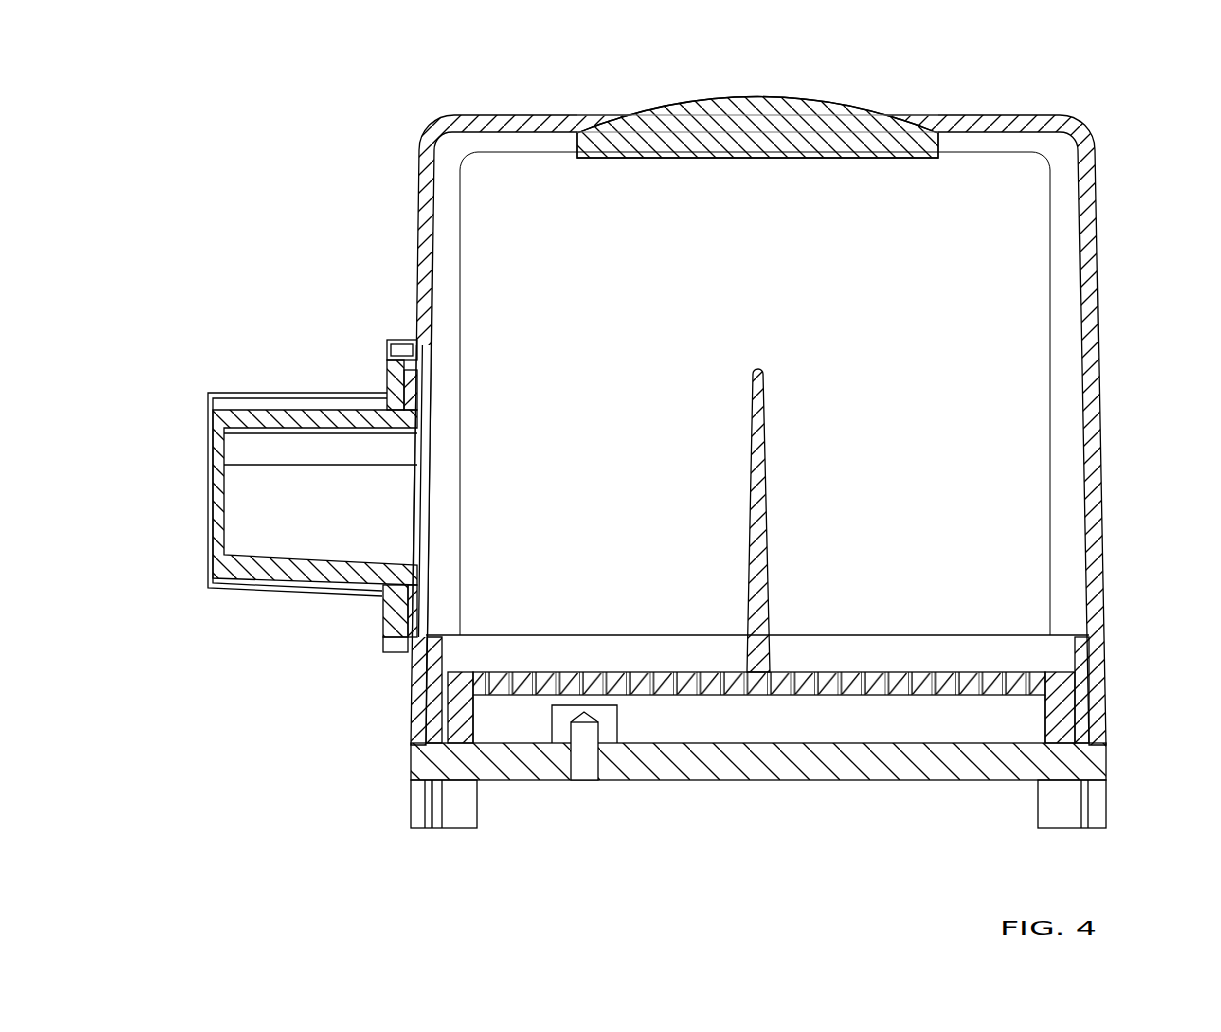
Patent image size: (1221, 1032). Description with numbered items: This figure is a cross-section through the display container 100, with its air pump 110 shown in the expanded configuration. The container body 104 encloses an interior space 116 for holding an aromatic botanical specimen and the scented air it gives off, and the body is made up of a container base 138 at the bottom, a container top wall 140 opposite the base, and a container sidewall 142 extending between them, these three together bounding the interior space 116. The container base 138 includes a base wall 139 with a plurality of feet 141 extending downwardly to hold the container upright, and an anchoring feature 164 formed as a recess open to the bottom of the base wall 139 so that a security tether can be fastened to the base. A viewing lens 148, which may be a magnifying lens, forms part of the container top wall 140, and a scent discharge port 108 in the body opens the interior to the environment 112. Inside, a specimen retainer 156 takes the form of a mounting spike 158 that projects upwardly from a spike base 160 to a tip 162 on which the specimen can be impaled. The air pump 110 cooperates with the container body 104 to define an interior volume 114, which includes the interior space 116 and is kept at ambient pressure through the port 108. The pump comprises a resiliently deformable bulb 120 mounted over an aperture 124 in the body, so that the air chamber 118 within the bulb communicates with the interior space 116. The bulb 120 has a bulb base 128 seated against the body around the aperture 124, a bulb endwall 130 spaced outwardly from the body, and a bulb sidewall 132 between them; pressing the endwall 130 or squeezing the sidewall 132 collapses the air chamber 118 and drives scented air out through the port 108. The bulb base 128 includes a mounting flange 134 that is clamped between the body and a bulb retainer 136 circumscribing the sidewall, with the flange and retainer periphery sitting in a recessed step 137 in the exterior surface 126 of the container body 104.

The display container 100 is at (651, 435).
The container body 104 is at (767, 379).
The scent discharge port 108 is at (1022, 105).
The air pump 110 is at (339, 501).
The environment 112 is at (676, 44).
The interior volume 114 is at (701, 286).
The interior space 116 is at (1038, 516).
The air chamber 118 is at (396, 497).
The resiliently deformable bulb 120 is at (215, 418).
The aperture 124 is at (425, 558).
The exterior surface 126 is at (420, 276).
The bulb base 128 is at (495, 390).
The bulb endwall 130 is at (301, 494).
The bulb sidewall 132 is at (286, 590).
The mounting flange 134 is at (408, 398).
The bulb retainer 136 is at (448, 370).
The recessed step 137 is at (395, 363).
The container base 138 is at (770, 780).
The base wall 139 is at (799, 780).
The container top wall 140 is at (545, 128).
The feet 141 is at (1102, 803).
The container sidewall 142 is at (1095, 400).
The viewing lens 148 is at (860, 102).
The specimen retainer 156 is at (736, 546).
The mounting spike 158 is at (742, 506).
The spike base 160 is at (774, 368).
The tip 162 is at (794, 660).
The anchoring feature 164 is at (586, 784).